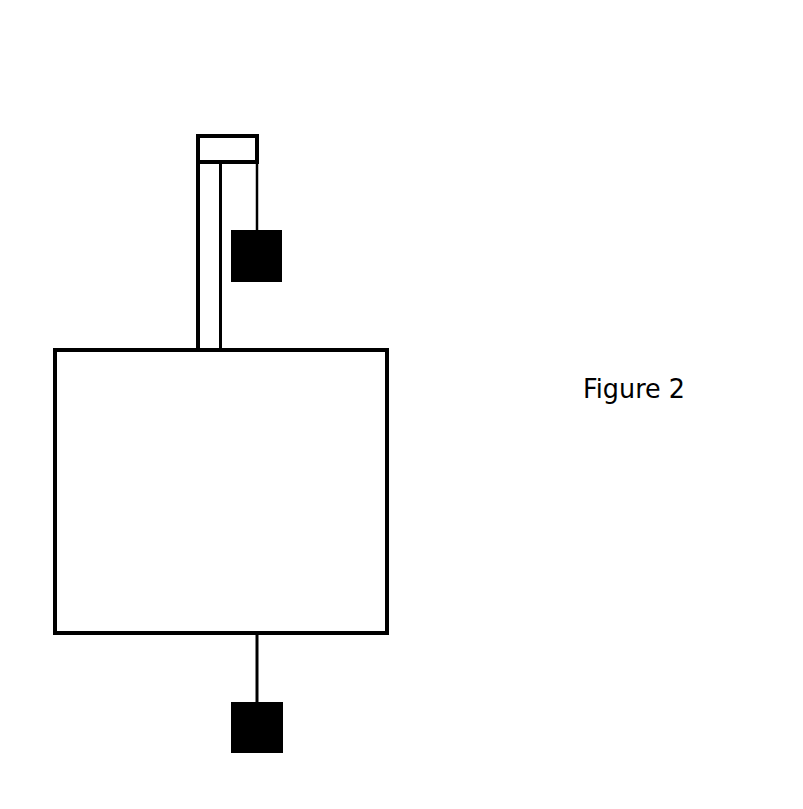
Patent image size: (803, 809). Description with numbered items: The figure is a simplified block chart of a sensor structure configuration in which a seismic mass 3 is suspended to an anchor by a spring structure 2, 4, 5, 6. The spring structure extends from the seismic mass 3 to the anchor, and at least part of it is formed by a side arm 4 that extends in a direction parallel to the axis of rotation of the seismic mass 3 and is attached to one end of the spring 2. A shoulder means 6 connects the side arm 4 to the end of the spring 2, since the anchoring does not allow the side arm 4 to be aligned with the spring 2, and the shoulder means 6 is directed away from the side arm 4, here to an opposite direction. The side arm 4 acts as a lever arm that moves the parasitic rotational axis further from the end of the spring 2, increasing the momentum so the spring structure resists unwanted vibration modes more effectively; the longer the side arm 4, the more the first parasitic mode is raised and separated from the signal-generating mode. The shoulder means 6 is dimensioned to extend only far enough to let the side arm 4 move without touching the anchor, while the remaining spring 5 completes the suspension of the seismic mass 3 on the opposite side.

The spring 2 is at (260, 196).
The seismic mass 3 is at (372, 465).
The side arm 4 is at (183, 265).
The spring structure element 5 is at (246, 668).
The shoulder means 6 is at (235, 125).